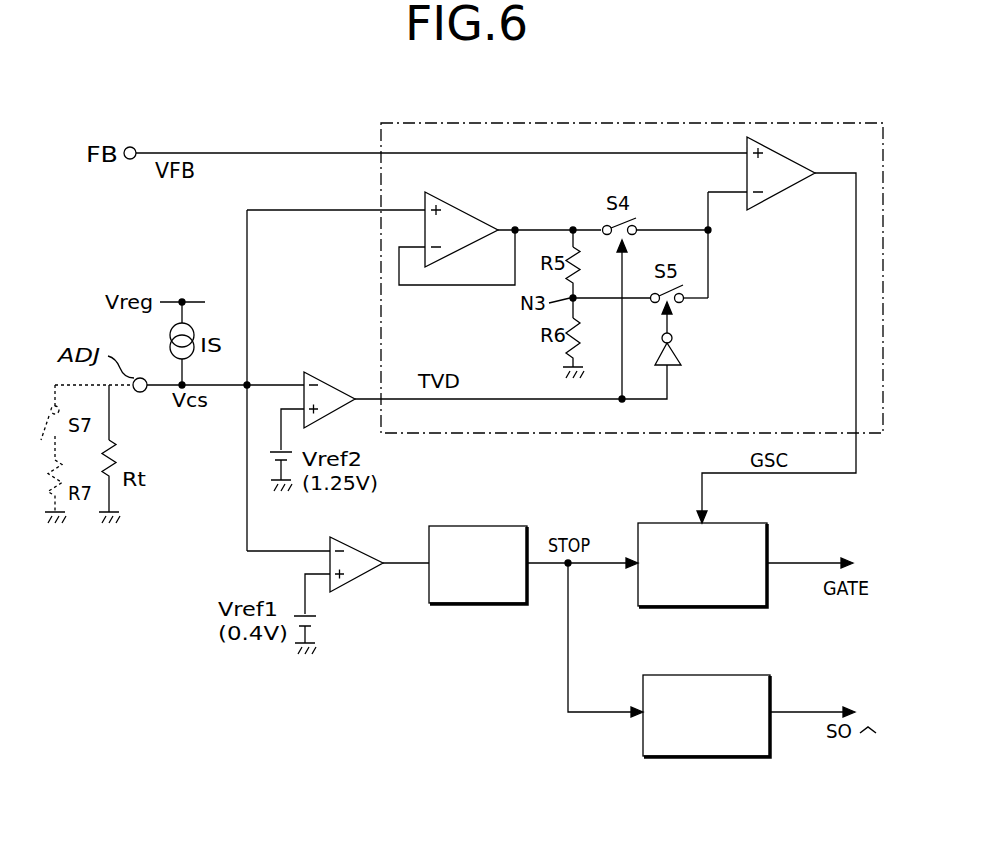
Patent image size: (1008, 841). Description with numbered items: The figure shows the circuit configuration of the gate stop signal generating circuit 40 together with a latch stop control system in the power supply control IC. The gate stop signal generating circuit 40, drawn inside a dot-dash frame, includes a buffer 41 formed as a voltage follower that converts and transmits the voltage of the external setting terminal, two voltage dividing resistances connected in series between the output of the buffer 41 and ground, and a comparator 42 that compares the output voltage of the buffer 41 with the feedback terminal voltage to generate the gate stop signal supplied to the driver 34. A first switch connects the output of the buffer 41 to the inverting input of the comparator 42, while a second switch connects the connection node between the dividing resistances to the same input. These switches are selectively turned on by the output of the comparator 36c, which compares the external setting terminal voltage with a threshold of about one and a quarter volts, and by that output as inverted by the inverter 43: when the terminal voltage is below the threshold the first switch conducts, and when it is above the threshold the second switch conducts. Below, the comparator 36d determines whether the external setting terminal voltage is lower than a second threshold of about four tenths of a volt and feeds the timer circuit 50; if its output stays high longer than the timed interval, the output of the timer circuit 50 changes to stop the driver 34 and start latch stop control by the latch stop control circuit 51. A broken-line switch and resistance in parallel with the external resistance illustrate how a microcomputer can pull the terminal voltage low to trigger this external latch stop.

The gate stop signal generating circuit 40 is at (433, 123).
The buffer 41 is at (472, 216).
The comparator 42 is at (770, 198).
The inverter 43 is at (681, 351).
The comparator 36c is at (318, 379).
The comparator 36d is at (362, 575).
The timer circuit 50 is at (468, 604).
The driver 34 is at (705, 608).
The latch stop control circuit 51 is at (703, 757).